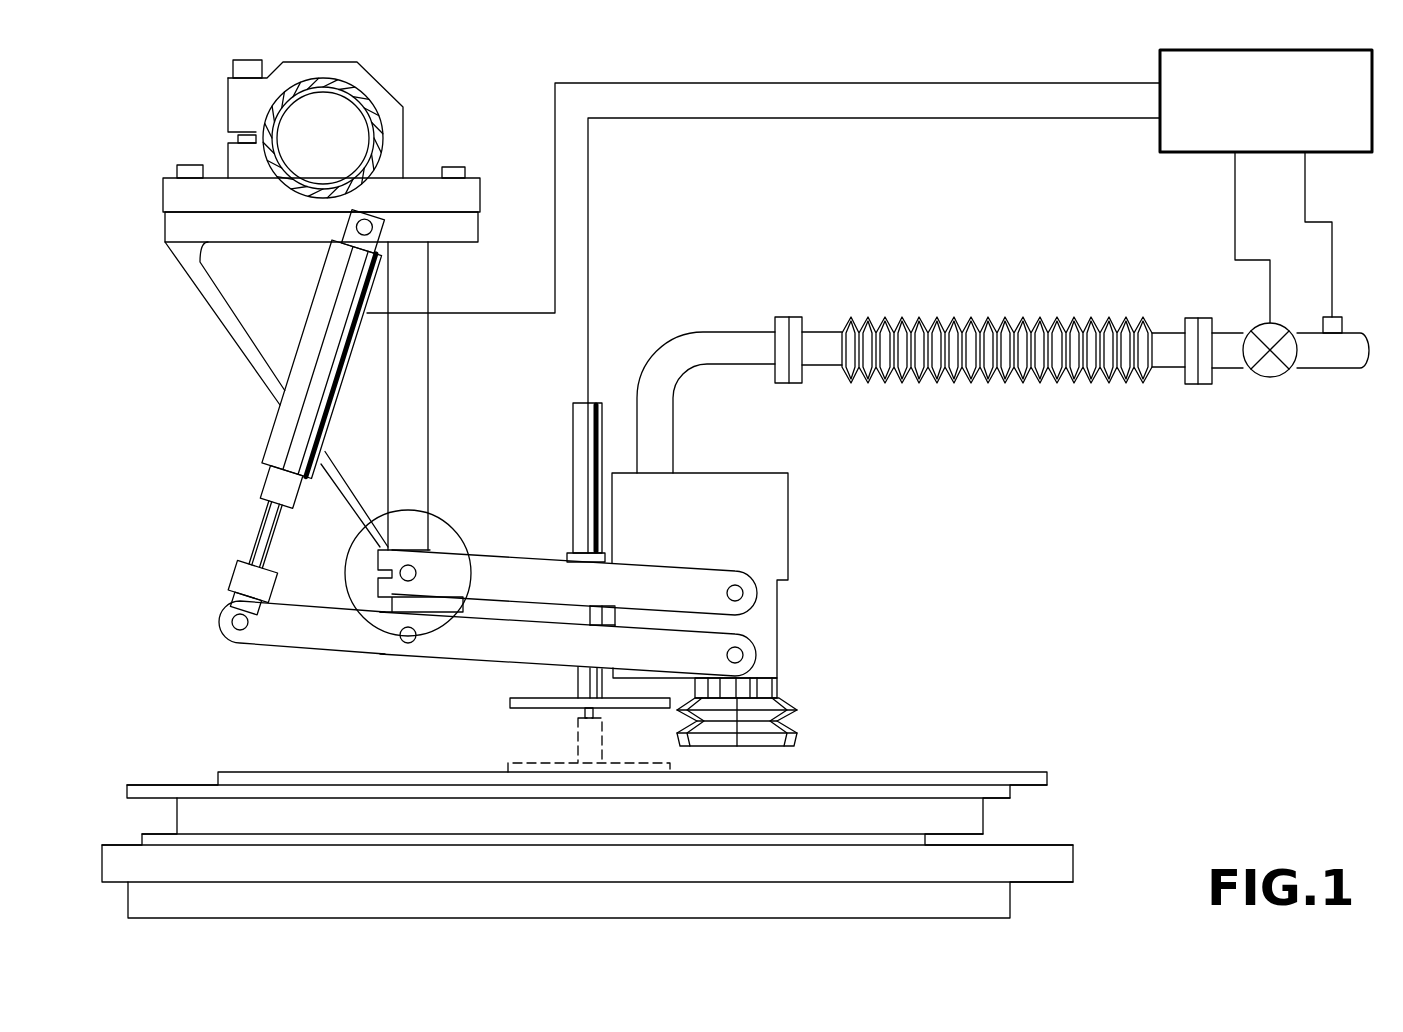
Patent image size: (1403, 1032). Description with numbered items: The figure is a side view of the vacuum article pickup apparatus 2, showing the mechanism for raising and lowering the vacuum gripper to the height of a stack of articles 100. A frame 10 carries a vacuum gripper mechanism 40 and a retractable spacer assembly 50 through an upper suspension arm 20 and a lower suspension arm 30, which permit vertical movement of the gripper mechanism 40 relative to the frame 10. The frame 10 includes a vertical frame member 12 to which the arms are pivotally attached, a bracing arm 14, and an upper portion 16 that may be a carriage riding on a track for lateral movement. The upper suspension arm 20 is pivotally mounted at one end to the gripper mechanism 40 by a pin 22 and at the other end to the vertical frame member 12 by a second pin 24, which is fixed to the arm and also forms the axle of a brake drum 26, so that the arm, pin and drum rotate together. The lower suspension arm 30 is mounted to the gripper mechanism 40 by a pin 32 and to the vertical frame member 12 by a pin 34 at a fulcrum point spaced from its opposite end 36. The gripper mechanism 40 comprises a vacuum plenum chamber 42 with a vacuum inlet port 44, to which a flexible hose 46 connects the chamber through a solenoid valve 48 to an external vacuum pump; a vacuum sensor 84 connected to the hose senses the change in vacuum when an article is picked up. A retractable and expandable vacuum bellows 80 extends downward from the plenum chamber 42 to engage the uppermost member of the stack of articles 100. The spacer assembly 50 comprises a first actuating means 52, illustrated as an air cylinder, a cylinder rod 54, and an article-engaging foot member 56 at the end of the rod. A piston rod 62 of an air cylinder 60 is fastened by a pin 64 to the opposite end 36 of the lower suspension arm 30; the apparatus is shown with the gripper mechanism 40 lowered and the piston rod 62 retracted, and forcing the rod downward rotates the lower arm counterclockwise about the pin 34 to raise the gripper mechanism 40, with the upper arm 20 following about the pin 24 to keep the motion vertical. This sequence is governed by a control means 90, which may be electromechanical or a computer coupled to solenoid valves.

The vacuum article pickup apparatus 2 is at (1008, 559).
The frame 10 is at (472, 270).
The vertical frame member 12 is at (428, 375).
The bracing arm 14 is at (212, 318).
The upper portion 16 is at (414, 190).
The upper suspension arm 20 is at (508, 555).
The pin 22 is at (745, 594).
The second pin 24 is at (415, 568).
The brake drum 26 is at (362, 548).
The lower suspension arm 30 is at (462, 648).
The pin 32 is at (745, 655).
The second pin 34 is at (403, 644).
The opposite end of lower suspension arm 36 is at (312, 636).
The vacuum gripper mechanism 40 is at (836, 488).
The vacuum plenum chamber 42 is at (688, 522).
The vacuum inlet port 44 is at (690, 332).
The flexible hose 46 is at (900, 318).
The solenoid valve 48 is at (1268, 378).
The retractable spacer assembly 50 is at (559, 396).
The first actuating means 52 is at (573, 452).
The cylinder rod 54 is at (590, 618).
The article-engaging portion 56 is at (545, 708).
The air cylinder 60 is at (280, 405).
The piston rod 62 is at (266, 514).
The pin 64 is at (243, 630).
The vacuum bellows 80 is at (797, 740).
The vacuum sensor 84 is at (1333, 317).
The control means 90 is at (1160, 150).
The stack of articles 100 is at (1068, 812).